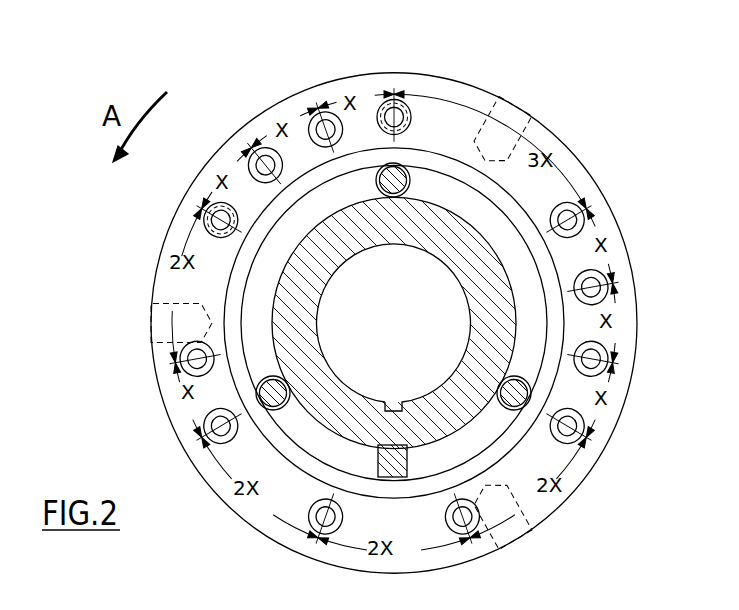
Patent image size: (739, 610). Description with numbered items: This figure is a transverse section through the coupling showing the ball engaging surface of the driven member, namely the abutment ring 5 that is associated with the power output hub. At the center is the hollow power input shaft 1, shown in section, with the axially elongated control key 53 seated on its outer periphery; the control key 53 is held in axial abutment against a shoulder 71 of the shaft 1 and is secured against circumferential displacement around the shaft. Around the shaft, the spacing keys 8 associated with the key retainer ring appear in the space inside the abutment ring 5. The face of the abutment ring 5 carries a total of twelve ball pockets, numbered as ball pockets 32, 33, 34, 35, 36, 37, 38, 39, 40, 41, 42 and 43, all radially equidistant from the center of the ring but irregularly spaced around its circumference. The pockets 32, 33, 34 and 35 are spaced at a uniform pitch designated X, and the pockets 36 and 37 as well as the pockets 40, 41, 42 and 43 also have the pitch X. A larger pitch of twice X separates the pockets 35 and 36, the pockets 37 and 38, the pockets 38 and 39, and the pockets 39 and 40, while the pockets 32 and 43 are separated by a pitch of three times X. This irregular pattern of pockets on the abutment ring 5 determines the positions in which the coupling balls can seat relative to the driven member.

The hollow power input shaft 1 is at (319, 318).
The abutment ring 5 is at (486, 96).
The spacing keys 8 is at (408, 186).
The control key 53 is at (408, 461).
The shoulder 71 is at (508, 247).
The ball pocket 32 is at (404, 108).
The ball pocket 33 is at (330, 113).
The ball pocket 34 is at (266, 148).
The ball pocket 35 is at (204, 222).
The ball pocket 36 is at (181, 355).
The ball pocket 37 is at (205, 426).
The ball pocket 38 is at (311, 523).
The ball pocket 39 is at (459, 534).
The ball pocket 40 is at (584, 425).
The ball pocket 41 is at (608, 356).
The ball pocket 42 is at (607, 287).
The ball pocket 43 is at (584, 221).